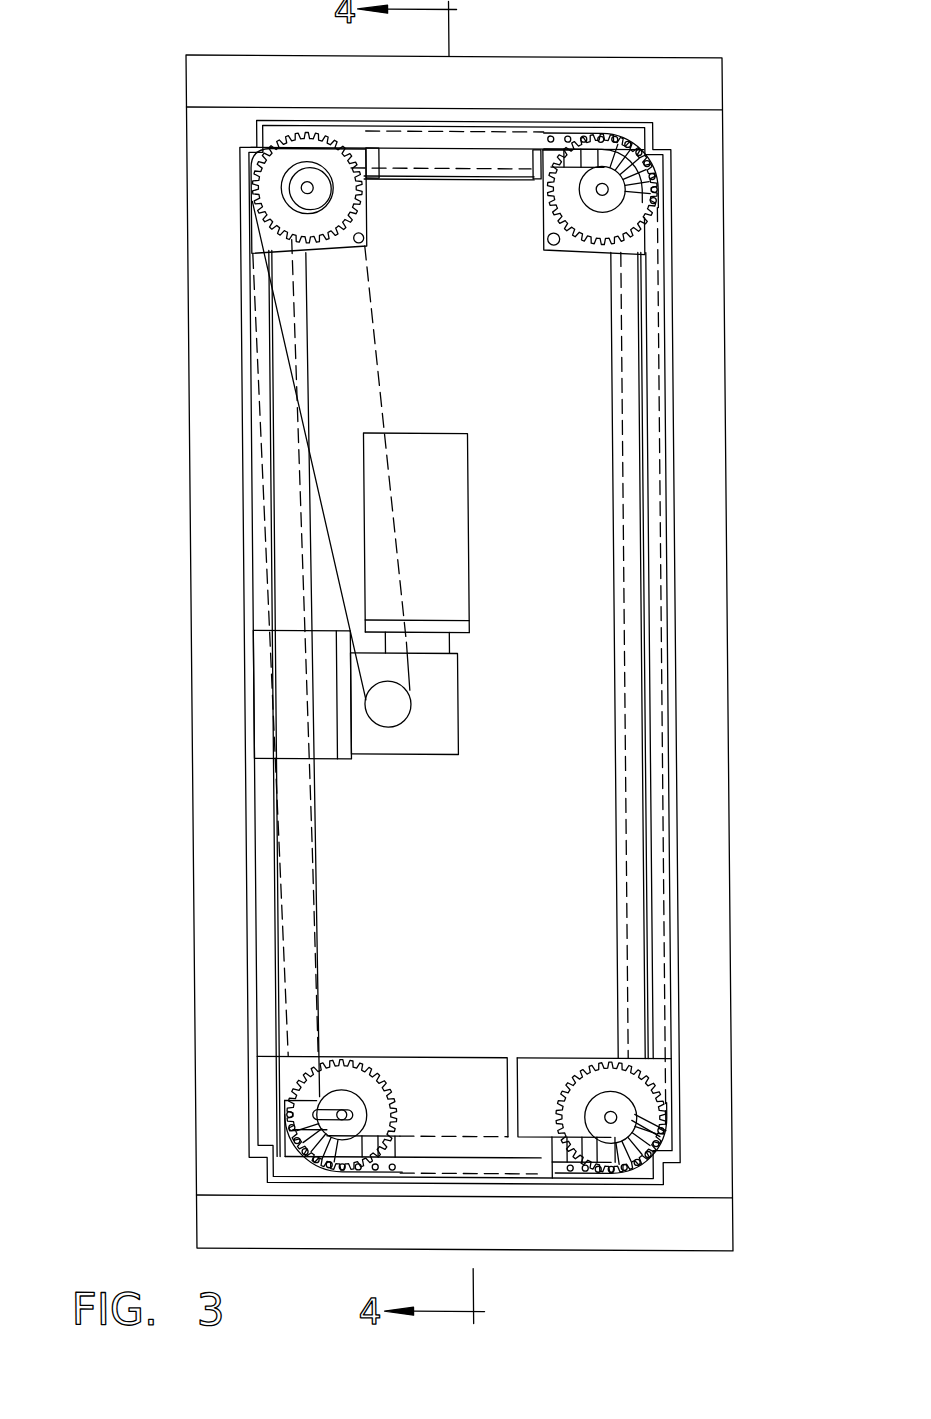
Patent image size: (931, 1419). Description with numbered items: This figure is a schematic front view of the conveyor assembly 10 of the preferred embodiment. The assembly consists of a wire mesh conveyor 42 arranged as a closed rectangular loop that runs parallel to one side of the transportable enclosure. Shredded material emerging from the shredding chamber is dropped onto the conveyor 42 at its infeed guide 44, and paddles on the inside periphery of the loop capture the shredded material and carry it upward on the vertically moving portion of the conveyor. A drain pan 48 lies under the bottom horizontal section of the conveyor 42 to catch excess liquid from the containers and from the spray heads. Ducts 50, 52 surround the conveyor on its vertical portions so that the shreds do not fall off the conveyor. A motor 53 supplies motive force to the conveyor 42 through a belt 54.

The conveyor assembly 10 is at (226, 188).
The wire mesh conveyor 42 is at (650, 731).
The infeed guide 44 is at (547, 1072).
The drain pan 48 is at (293, 1170).
The duct 50 is at (319, 842).
The duct 52 is at (615, 773).
The motor 53 is at (443, 525).
The belt 54 is at (377, 367).